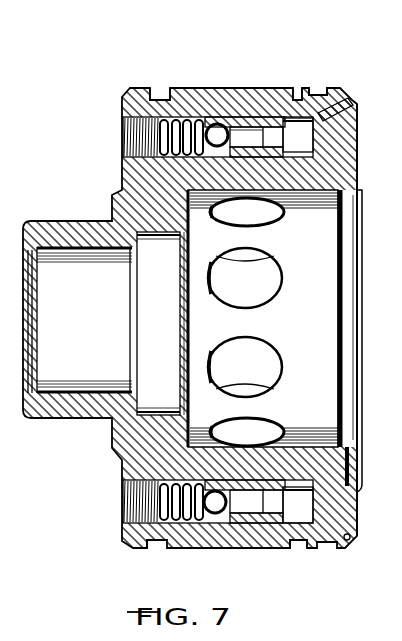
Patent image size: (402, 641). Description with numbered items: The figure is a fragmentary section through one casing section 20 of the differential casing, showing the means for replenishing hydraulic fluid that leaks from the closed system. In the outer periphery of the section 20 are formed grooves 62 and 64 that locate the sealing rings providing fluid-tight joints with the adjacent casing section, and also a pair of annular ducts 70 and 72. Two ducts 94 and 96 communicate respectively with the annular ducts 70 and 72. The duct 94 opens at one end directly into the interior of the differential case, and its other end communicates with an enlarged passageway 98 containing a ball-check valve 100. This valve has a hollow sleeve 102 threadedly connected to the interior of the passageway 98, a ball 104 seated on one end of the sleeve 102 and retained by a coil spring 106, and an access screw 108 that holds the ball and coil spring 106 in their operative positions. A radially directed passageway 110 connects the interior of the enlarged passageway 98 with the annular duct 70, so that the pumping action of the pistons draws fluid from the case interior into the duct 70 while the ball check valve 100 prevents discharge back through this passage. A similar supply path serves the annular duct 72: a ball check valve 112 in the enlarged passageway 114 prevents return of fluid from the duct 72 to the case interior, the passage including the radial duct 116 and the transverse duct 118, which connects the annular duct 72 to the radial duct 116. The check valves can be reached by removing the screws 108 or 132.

The casing section 20 is at (119, 171).
The groove 62 is at (153, 98).
The groove 64 is at (312, 92).
The annular duct 70 is at (178, 96).
The annular duct 72 is at (295, 98).
The duct 94 is at (349, 541).
The duct 96 is at (349, 101).
The enlarged passageway 98 is at (288, 522).
The ball-check valve 100 is at (247, 525).
The hollow sleeve 102 is at (247, 521).
The ball 104 is at (215, 490).
The coil spring 106 is at (183, 482).
The access screw 108 is at (124, 506).
The radially directed passageway 110 is at (155, 548).
The ball check valve 112 is at (240, 116).
The enlarged passageway 114 is at (300, 150).
The radial duct 116 is at (212, 116).
The transverse duct 118 is at (261, 90).
The screw 132 is at (130, 131).